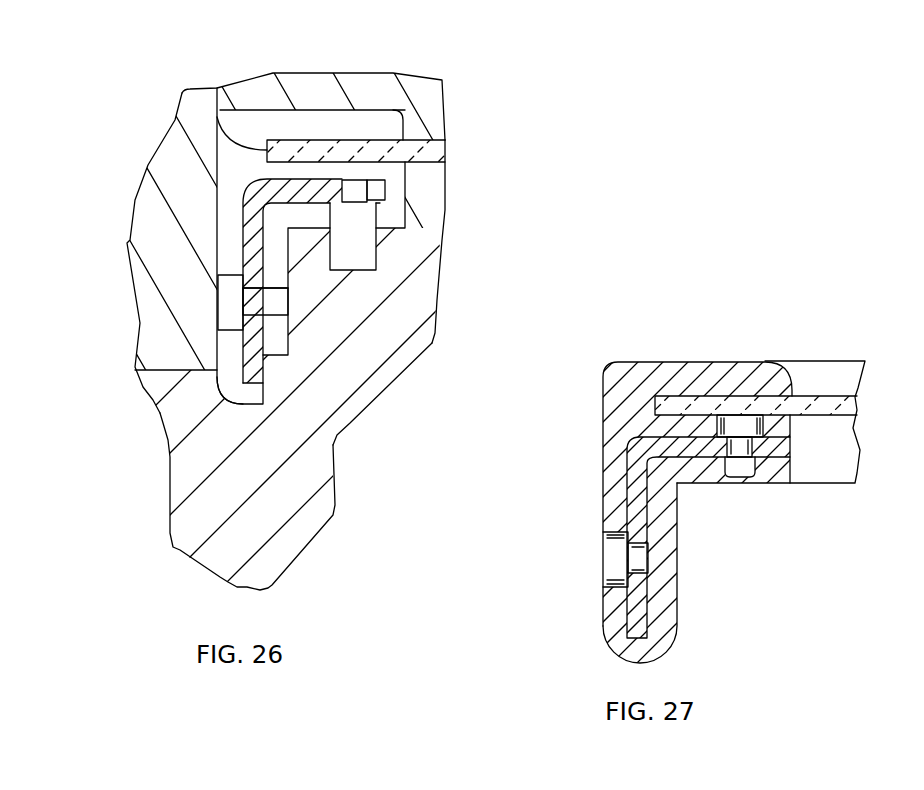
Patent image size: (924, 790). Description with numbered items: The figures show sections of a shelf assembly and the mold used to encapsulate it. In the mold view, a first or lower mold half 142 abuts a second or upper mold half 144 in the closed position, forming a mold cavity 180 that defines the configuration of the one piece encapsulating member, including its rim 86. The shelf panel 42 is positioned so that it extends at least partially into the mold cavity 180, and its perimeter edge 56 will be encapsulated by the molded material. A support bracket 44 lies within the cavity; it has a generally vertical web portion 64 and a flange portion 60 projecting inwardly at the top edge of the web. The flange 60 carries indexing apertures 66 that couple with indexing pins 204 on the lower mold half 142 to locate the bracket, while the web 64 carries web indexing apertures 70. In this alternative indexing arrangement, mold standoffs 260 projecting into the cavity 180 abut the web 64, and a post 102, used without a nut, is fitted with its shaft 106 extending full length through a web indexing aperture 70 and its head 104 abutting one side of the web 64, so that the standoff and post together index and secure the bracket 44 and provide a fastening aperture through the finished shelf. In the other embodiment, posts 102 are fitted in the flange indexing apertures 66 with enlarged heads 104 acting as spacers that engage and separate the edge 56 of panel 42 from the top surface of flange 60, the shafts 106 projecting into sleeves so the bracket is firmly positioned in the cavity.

In FIG. 26, the shelf panel 42 is at (438, 153).
In FIG. 27, the shelf panel 42 is at (856, 403).
In FIG. 26, the support bracket 44 is at (244, 196).
In FIG. 27, the support bracket 44 is at (633, 492).
In FIG. 26, the perimeter edge 56 is at (217, 90).
In FIG. 27, the perimeter edge 56 is at (645, 400).
In FIG. 26, the flange portion 60 is at (383, 197).
In FIG. 26, the web portion 64 is at (230, 396).
In FIG. 26, the indexing aperture 66 is at (368, 178).
In FIG. 26, the web indexing aperture 70 is at (257, 284).
In FIG. 27, the rim 86 is at (817, 367).
In FIG. 26, the post 102 is at (176, 318).
In FIG. 27, the post 102 is at (768, 512).
In FIG. 26, the post head 104 is at (225, 307).
In FIG. 27, the post head 104 is at (607, 558).
In FIG. 26, the post shaft 106 is at (289, 304).
In FIG. 27, the post shaft 106 is at (786, 493).
In FIG. 26, the first or lower mold half 142 is at (173, 545).
In FIG. 26, the second or upper mold half 144 is at (172, 134).
In FIG. 26, the mold cavity 180 is at (385, 128).
In FIG. 26, the indexing pin 204 is at (370, 256).
In FIG. 26, the mold standoff 260 is at (283, 372).